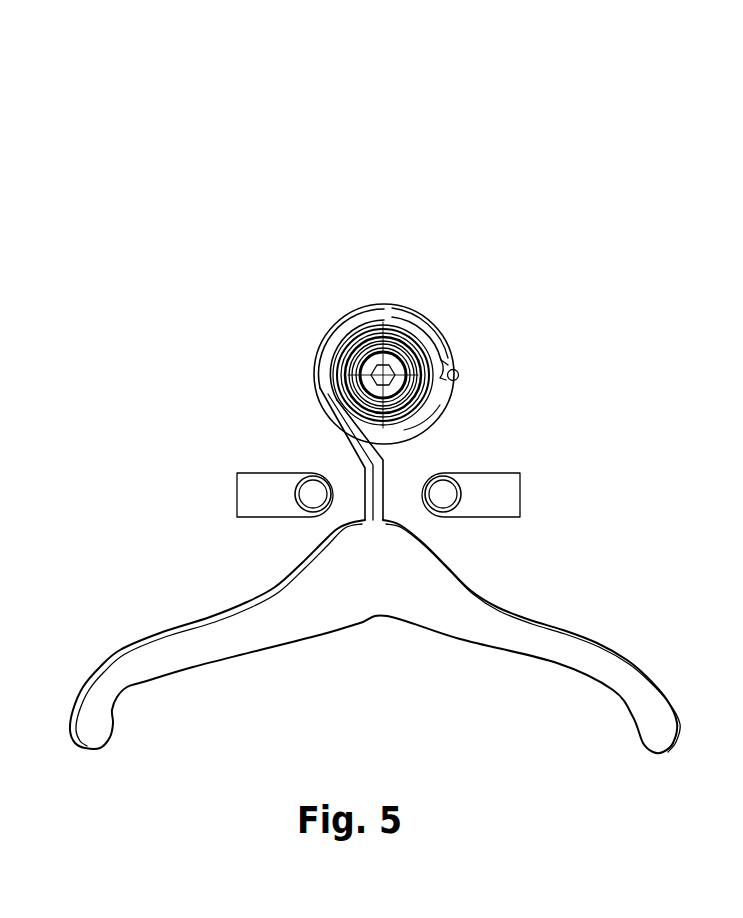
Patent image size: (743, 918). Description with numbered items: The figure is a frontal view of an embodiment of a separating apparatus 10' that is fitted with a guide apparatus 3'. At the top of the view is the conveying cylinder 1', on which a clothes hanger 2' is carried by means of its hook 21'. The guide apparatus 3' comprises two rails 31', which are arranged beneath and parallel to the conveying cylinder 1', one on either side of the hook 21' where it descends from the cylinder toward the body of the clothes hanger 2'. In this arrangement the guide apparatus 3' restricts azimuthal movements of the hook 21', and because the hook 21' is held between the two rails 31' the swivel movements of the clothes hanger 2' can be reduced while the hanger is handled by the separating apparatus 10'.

The separating apparatus 10' is at (378, 485).
The conveying cylinder 1' is at (376, 351).
The hook 21' is at (434, 454).
The guide apparatus 3' is at (375, 472).
The rail 31' is at (375, 509).
The clothes hanger 2' is at (378, 636).